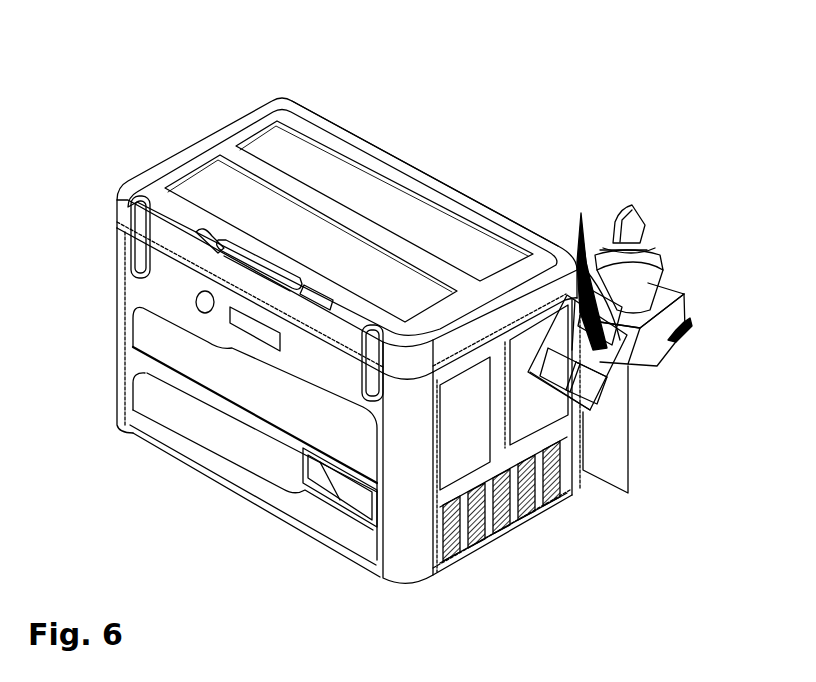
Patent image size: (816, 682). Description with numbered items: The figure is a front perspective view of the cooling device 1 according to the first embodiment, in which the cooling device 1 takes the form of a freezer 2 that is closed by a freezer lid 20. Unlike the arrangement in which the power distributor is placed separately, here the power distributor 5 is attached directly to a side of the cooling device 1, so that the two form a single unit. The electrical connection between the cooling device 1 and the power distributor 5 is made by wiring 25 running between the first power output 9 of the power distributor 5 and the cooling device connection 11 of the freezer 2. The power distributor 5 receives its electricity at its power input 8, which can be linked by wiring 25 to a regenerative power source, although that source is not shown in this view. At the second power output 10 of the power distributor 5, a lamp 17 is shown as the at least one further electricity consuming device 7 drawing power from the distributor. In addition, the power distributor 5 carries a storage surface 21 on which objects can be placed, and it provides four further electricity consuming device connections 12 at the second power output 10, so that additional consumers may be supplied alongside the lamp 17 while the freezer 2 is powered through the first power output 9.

The cooling device 1 is at (440, 126).
The freezer 2 is at (291, 411).
The power distributor 5 is at (670, 290).
The electricity consuming device 7 is at (649, 212).
The power input 8 is at (672, 341).
The first power output 9 is at (640, 388).
The second power output 10 is at (695, 305).
The cooling device connection 11 is at (645, 383).
The further electricity consuming device connections 12 is at (594, 265).
The lamp 17 is at (640, 302).
The freezer lid 20 is at (382, 285).
The storage surface 21 is at (577, 373).
The wiring 25 is at (632, 482).